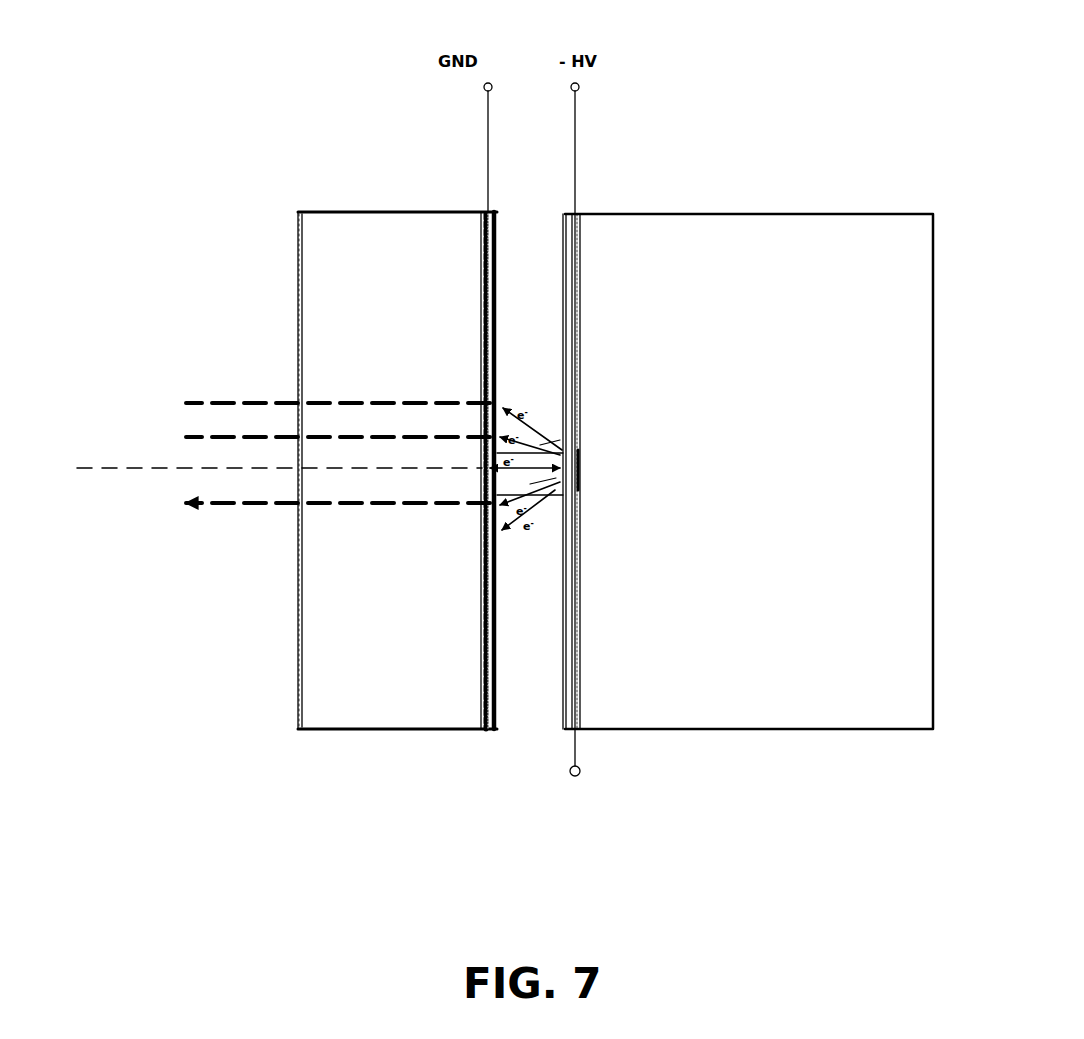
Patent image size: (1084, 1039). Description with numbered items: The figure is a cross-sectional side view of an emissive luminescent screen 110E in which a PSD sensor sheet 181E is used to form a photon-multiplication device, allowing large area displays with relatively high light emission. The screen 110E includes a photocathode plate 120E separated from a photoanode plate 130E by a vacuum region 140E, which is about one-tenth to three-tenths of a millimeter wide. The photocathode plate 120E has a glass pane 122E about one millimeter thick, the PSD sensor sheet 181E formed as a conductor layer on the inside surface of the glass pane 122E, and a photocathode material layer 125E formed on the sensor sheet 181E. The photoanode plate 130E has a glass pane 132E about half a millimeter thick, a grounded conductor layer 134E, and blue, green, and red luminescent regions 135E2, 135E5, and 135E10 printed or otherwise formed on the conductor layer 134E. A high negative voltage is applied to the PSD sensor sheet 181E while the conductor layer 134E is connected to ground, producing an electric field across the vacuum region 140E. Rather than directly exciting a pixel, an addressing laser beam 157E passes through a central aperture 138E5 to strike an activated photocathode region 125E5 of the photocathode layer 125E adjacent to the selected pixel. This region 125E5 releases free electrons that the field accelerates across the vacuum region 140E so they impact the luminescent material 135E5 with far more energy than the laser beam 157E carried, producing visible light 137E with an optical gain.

The emissive luminescent screen 110E is at (383, 68).
The photoanode plate 130E is at (352, 176).
The glass pane 132E is at (329, 228).
The conductor layer 134E is at (487, 211).
The luminescent region 135E2 is at (487, 350).
The luminescent region 135E5 is at (480, 495).
The central aperture 138E5 is at (462, 487).
The luminescent region 135E10 is at (498, 690).
The photocathode plate 120E is at (744, 156).
The glass pane 122E is at (742, 228).
The PSD sensor sheet 181E is at (573, 213).
The photocathode material layer 125E is at (570, 343).
The activated photocathode region 125E5 is at (584, 466).
The vacuum region 140E is at (544, 756).
The visible light 137E is at (250, 503).
The laser beam 157E is at (145, 468).